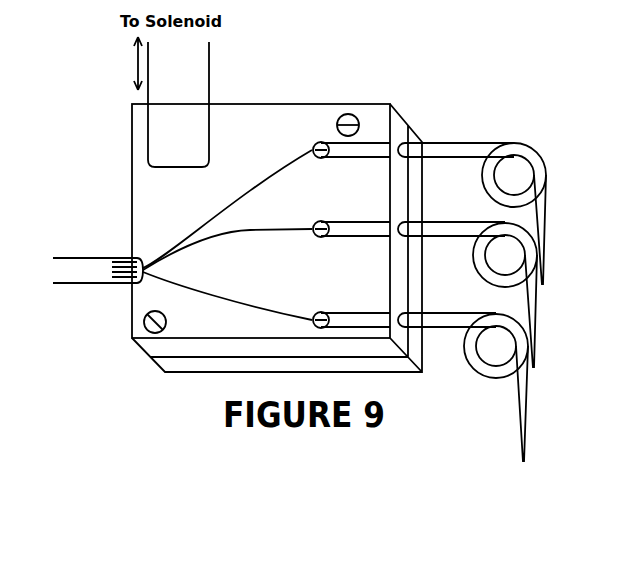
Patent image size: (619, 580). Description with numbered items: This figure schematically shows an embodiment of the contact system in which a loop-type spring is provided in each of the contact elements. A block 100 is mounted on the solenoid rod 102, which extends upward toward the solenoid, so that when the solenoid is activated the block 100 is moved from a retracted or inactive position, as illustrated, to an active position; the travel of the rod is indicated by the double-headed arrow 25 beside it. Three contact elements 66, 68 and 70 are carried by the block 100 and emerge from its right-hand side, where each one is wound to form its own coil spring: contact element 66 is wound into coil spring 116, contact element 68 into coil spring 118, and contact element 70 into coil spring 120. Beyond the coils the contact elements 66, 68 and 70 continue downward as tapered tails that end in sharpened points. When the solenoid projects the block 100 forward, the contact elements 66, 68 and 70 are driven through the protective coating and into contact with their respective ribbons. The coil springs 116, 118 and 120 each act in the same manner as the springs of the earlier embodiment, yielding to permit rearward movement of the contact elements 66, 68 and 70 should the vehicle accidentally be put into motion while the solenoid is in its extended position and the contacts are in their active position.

The plunger travel distance 25 is at (136, 50).
The solenoid rod 102 is at (209, 73).
The block 100 is at (208, 365).
The coil spring 116 is at (512, 143).
The coil spring 118 is at (500, 223).
The coil spring 120 is at (497, 313).
The contact element 66 is at (548, 220).
The contact element 68 is at (537, 308).
The contact element 70 is at (527, 403).